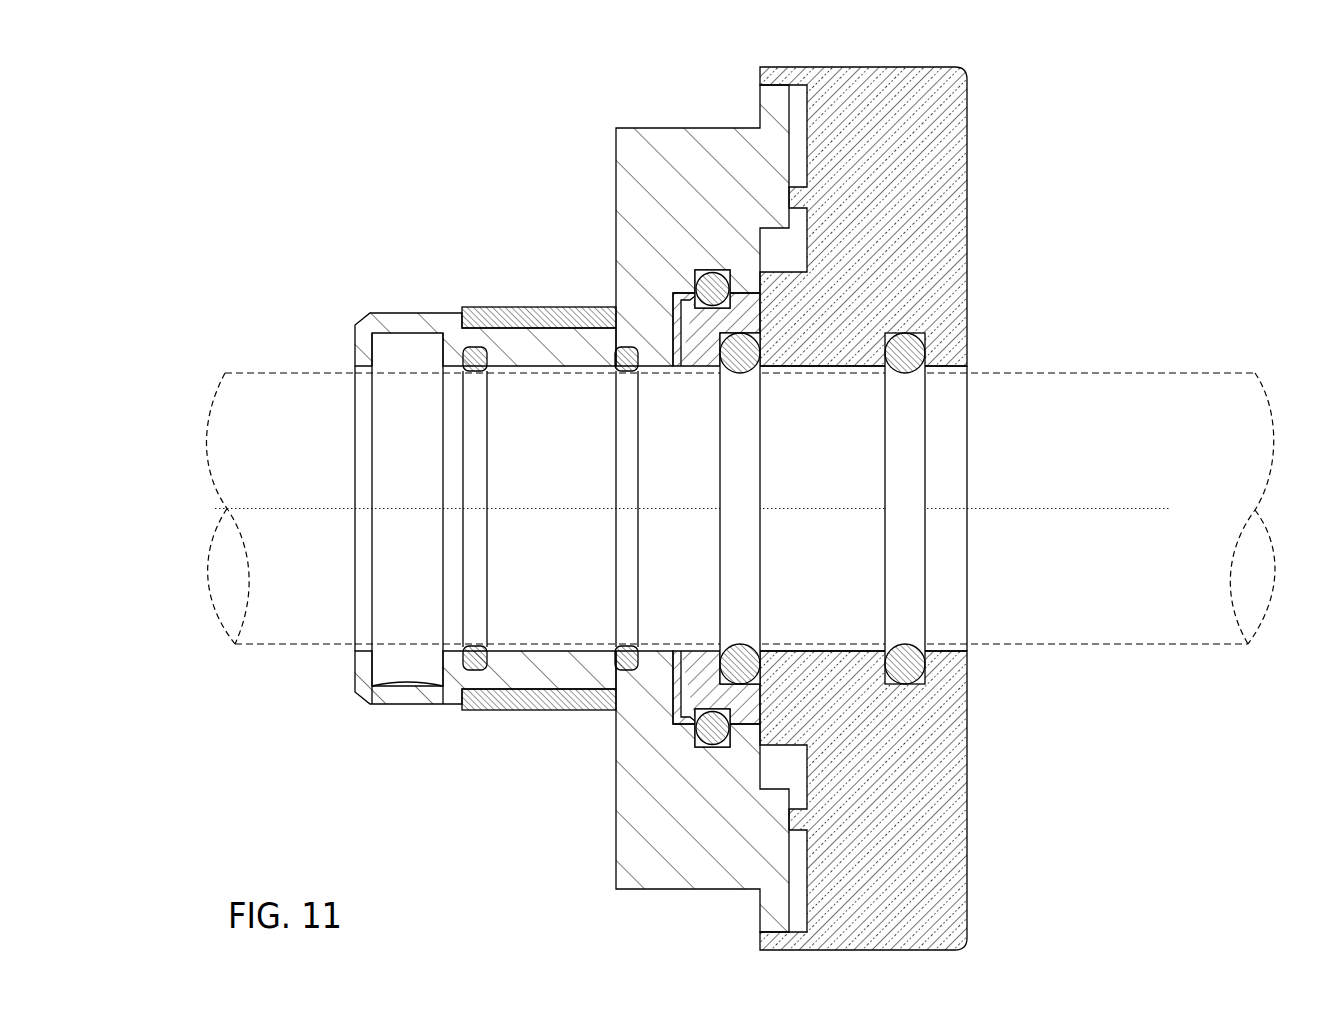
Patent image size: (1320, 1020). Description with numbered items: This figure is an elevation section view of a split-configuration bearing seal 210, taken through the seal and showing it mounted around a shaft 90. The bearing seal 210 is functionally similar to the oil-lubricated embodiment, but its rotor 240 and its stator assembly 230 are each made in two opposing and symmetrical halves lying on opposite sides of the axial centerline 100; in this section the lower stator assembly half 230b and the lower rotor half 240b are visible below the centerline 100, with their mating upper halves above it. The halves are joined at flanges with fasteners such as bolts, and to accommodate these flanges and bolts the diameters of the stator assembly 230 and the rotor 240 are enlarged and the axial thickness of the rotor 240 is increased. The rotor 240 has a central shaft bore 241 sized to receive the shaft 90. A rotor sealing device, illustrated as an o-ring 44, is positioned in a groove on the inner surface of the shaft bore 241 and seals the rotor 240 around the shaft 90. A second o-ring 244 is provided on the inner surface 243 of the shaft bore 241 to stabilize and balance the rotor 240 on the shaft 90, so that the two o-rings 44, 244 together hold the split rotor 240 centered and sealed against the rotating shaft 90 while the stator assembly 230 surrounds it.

The shaft 90 is at (285, 445).
The axial centerline 100 is at (1058, 512).
The split-configuration bearing seal 210 is at (460, 195).
The stator assembly 230 is at (621, 486).
The lower stator assembly half 230b is at (637, 873).
The rotor 240 is at (987, 503).
The lower rotor half 240b is at (965, 938).
The shaft bore 241 is at (1005, 618).
The inner surface 243 is at (785, 367).
The second o-ring 244 is at (740, 375).
The o-ring 44 is at (908, 378).